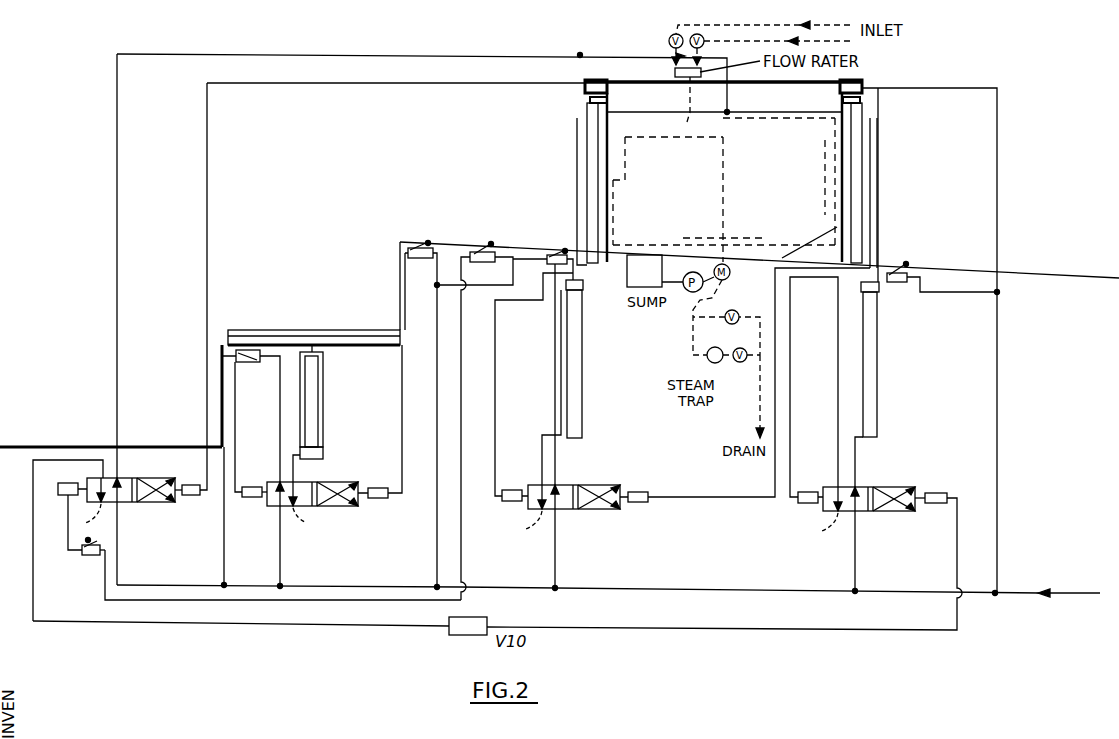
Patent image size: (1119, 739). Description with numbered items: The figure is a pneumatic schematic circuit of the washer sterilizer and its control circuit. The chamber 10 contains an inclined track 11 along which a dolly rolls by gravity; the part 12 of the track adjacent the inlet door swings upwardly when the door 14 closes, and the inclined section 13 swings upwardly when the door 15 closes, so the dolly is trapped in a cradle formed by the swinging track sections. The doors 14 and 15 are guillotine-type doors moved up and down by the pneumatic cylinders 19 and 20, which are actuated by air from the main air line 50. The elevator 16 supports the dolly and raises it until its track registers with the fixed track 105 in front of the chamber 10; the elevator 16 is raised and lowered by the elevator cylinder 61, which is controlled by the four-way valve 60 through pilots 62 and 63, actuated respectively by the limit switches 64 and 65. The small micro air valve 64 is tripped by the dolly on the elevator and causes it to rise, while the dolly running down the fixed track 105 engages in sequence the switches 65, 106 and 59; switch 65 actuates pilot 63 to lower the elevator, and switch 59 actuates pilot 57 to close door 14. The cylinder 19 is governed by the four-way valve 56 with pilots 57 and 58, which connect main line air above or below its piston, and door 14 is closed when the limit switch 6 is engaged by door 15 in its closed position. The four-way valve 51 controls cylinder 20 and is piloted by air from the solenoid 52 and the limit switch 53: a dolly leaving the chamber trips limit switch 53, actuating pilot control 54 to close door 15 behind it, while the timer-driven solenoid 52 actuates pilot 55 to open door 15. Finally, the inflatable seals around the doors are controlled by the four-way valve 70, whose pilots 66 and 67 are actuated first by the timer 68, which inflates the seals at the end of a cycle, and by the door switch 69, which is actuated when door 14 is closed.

The limit switch 6 is at (851, 83).
The chamber 10 is at (778, 112).
The inclined track 11 is at (778, 245).
The track part 12 is at (668, 253).
The inclined track section 13 is at (808, 243).
The door 14 is at (592, 178).
The door 15 is at (857, 193).
The elevator 16 is at (323, 333).
The pneumatic cylinder 19 is at (574, 392).
The pneumatic cylinder 20 is at (874, 383).
The main air line 50 is at (1049, 589).
The four-way valve 51 is at (885, 490).
The solenoid 52 is at (467, 637).
The limit switch 53 is at (905, 282).
The pilot control 54 is at (807, 503).
The pilot 55 is at (940, 504).
The four-way valve 56 is at (610, 509).
The pilot 57 is at (510, 490).
The pilot 58 is at (638, 491).
The limit switch 59 is at (553, 250).
The four-way valve 60 is at (340, 507).
The elevator cylinder 61 is at (325, 398).
The pilot 62 is at (250, 487).
The pilot 63 is at (378, 488).
The micro air valve 64 is at (221, 353).
The limit switch 65 is at (415, 247).
The pilot 66 is at (62, 487).
The pilot 67 is at (190, 485).
The timer 68 is at (92, 557).
The door switch 69 is at (586, 93).
The four-way valve 70 is at (167, 500).
The fixed track 105 is at (448, 243).
The switch 106 is at (475, 265).